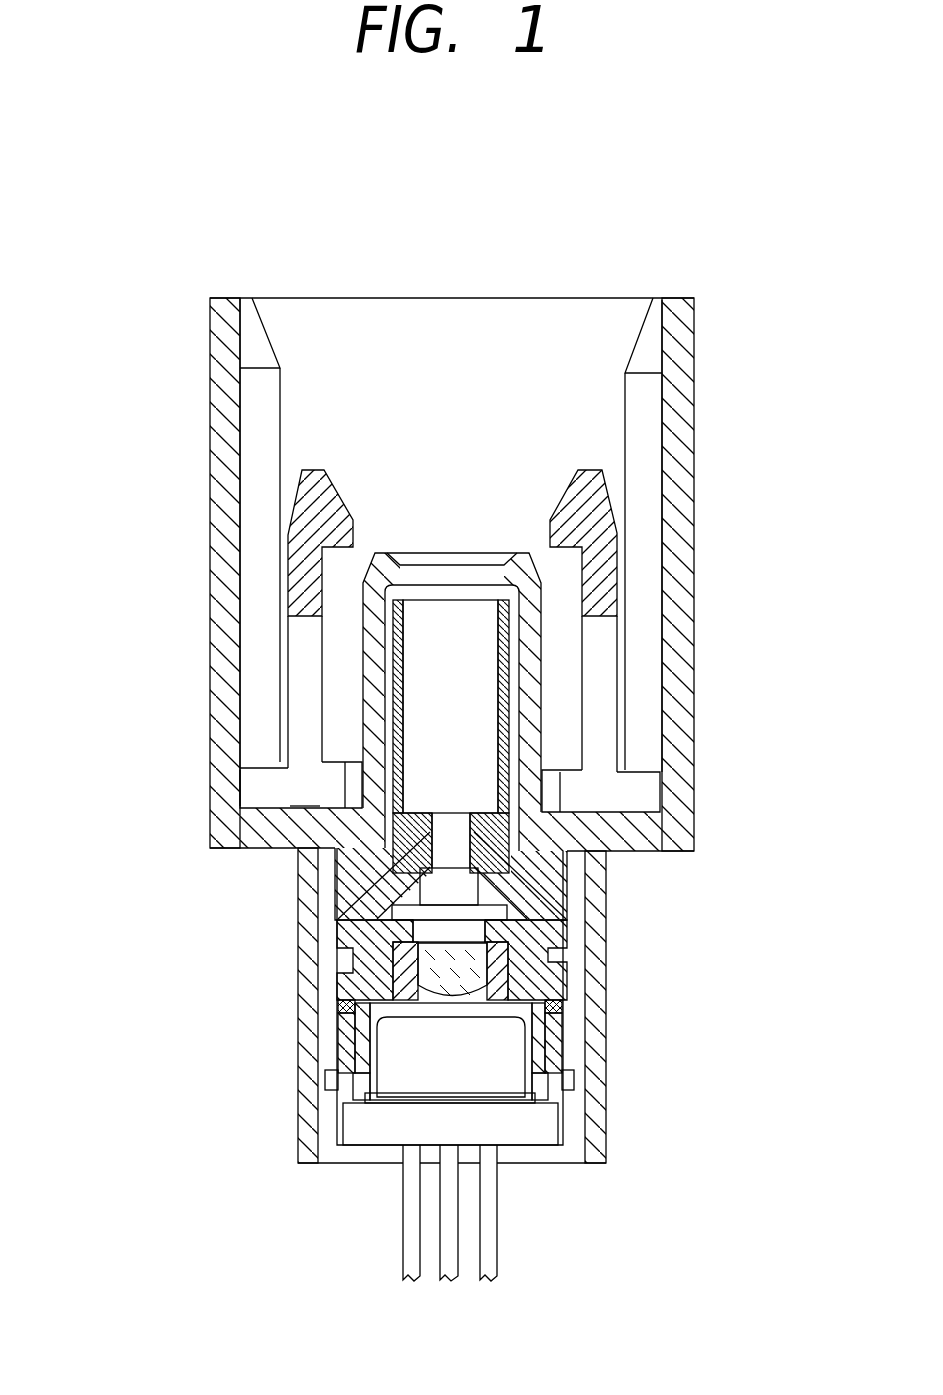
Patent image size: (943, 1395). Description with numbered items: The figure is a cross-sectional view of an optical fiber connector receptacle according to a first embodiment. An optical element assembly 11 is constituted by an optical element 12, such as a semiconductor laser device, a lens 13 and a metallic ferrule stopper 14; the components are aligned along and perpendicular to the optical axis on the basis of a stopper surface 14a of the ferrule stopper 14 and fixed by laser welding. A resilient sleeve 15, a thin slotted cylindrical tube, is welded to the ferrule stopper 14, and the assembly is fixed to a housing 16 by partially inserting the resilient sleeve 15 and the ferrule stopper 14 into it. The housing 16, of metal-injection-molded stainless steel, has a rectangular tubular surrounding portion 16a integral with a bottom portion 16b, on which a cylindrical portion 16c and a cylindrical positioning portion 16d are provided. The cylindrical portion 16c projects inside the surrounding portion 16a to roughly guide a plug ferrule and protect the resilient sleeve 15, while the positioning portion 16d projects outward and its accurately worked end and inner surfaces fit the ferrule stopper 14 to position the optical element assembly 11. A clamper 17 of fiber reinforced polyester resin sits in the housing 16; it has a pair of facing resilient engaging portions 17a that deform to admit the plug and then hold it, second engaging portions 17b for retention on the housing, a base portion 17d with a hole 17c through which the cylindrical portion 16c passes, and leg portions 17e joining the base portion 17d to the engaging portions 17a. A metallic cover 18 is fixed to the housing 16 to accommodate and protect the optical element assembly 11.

The optical element assembly 11 is at (475, 980).
The optical element 12 is at (518, 1145).
The lens 13 is at (518, 1130).
The ferrule stopper 14 is at (562, 850).
The stopper surface 14a is at (515, 772).
The resilient sleeve 15 is at (503, 676).
The housing 16 is at (499, 641).
The surrounding portion 16a is at (672, 445).
The bottom portion 16b is at (642, 840).
The cylindrical portion 16c is at (528, 615).
The cylindrical positioning portion 16d is at (357, 872).
The clamper 17 is at (372, 580).
The resilient engaging portions 17a is at (310, 503).
The second engaging portions 17b is at (247, 788).
The hole 17c is at (358, 773).
The base portion 17d is at (291, 798).
The leg portions 17e is at (303, 637).
The metallic cover 18 is at (300, 1130).